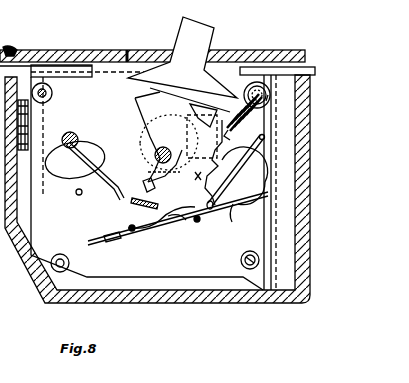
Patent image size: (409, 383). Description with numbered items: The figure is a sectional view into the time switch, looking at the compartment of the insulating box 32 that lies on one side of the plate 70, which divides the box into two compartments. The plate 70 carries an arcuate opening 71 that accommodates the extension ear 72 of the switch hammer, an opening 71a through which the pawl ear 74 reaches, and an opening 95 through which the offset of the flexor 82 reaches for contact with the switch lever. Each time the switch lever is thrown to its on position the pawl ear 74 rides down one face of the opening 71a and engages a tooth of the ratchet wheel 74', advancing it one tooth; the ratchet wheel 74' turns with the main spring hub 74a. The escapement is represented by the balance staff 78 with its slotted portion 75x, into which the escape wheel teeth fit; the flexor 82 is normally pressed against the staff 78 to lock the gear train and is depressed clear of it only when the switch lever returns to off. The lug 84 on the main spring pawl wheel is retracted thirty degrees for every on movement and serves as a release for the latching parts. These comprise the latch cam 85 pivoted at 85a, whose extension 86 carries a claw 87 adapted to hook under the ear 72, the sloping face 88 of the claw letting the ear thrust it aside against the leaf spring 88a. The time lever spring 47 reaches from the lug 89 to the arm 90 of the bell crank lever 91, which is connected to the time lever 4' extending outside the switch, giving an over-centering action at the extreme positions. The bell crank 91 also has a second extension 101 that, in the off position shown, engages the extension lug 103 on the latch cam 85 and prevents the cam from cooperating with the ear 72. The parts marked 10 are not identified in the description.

The time lever 4' is at (182, 57).
The screw 10 is at (53, 83).
The box 32 is at (154, 295).
The time lever spring 47 is at (267, 108).
The plate 70 is at (198, 280).
The arcuate opening 71 is at (147, 172).
The opening 71a is at (209, 104).
The extension ear 72 is at (144, 185).
The pawl ear 74 is at (178, 142).
The ratchet wheel 74' is at (121, 116).
The main spring hub 74a is at (158, 150).
The slotted portion 75x is at (57, 136).
The balance staff 78 is at (68, 132).
The flexor 82 is at (74, 160).
The lug 84 is at (132, 202).
The latch cam 85 is at (229, 202).
The pivot 85a is at (272, 150).
The extension 86 is at (215, 222).
The claw 87 is at (186, 224).
The sloping face 88 is at (128, 228).
The leaf spring 88a is at (140, 244).
The lug 89 is at (270, 101).
The arm 90 is at (220, 135).
The bell crank lever 91 is at (158, 137).
The opening 95 is at (72, 178).
The second extension 101 is at (202, 190).
The extension lug 103 is at (243, 221).